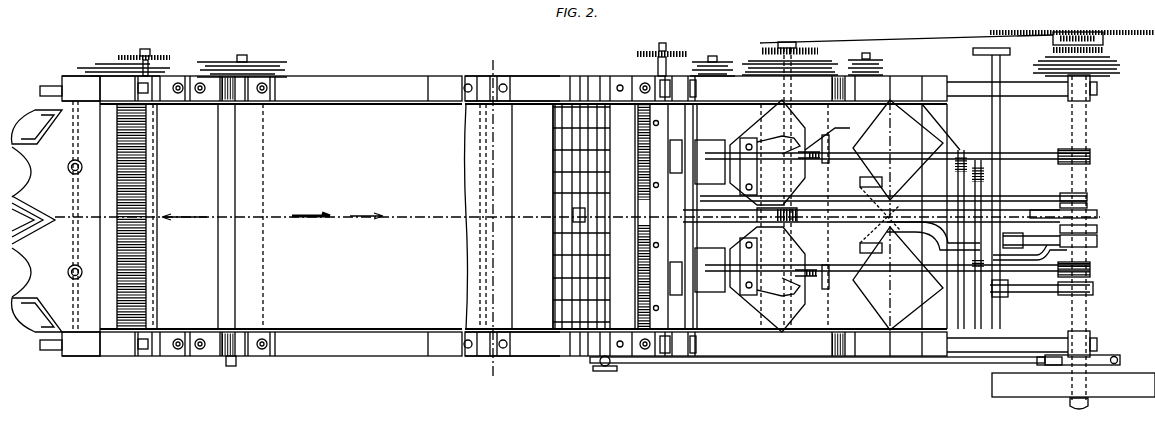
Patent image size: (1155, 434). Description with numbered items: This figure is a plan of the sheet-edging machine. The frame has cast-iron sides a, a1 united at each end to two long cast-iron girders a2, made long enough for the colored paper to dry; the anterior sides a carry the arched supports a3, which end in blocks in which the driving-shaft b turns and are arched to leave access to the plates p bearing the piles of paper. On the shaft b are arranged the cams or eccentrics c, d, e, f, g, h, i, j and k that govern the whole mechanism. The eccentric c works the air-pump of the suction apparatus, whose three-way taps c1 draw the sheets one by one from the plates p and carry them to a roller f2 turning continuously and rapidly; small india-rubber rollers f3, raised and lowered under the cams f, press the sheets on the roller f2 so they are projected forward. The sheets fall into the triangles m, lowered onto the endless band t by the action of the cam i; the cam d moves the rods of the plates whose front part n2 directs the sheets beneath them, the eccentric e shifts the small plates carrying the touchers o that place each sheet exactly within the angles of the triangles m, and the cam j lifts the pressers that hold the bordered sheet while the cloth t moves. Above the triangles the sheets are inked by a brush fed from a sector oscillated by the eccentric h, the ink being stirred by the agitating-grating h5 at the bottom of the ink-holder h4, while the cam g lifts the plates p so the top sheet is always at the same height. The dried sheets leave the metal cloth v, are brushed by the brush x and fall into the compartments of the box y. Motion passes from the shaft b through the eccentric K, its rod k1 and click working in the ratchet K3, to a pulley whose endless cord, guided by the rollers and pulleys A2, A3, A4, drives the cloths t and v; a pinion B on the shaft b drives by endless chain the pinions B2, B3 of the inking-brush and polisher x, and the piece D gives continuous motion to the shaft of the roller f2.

The frame side a is at (504, 216).
The frame side a1 is at (82, 216).
The girder a2 is at (512, 216).
The arched support a3 is at (1022, 216).
The box y is at (55, 216).
The brush x is at (123, 216).
The endless band t is at (577, 228).
The metal cloth v is at (340, 208).
The ink-holder h4 is at (570, 216).
The toothed roller q is at (651, 216).
The directing part of the plate n2 is at (770, 213).
The triangle m is at (767, 216).
The plate p is at (898, 215).
The ratchet K3 is at (782, 184).
The cam k is at (812, 66).
The pinion B2 is at (662, 54).
The roller or pulley of the cord A2 is at (494, 60).
The roller or pulley of the cord A3 is at (117, 64).
The pinion B3 is at (144, 58).
The roller or pulley of the cord A4 is at (244, 57).
The rod of the eccentric k1 is at (957, 31).
The eccentric K is at (1084, 40).
The pinion B is at (1103, 50).
The piece D is at (1083, 68).
The driving-shaft b is at (1073, 242).
The cam f is at (904, 214).
The small roller f3 is at (812, 216).
The roller f2 is at (827, 126).
The cam g is at (1047, 289).
The eccentric c is at (893, 216).
The cam j is at (900, 194).
The cam i is at (1079, 204).
The cam d is at (1085, 228).
The eccentric e is at (1051, 246).
The toucher o is at (911, 236).
The three-way tap c1 is at (880, 215).
The agitating-grating h5 is at (826, 368).
The eccentric h is at (1085, 351).